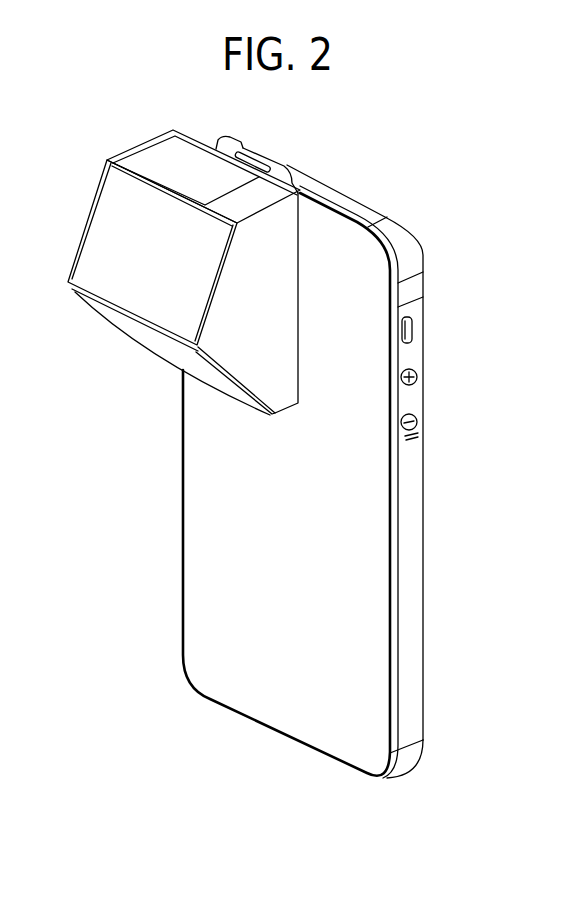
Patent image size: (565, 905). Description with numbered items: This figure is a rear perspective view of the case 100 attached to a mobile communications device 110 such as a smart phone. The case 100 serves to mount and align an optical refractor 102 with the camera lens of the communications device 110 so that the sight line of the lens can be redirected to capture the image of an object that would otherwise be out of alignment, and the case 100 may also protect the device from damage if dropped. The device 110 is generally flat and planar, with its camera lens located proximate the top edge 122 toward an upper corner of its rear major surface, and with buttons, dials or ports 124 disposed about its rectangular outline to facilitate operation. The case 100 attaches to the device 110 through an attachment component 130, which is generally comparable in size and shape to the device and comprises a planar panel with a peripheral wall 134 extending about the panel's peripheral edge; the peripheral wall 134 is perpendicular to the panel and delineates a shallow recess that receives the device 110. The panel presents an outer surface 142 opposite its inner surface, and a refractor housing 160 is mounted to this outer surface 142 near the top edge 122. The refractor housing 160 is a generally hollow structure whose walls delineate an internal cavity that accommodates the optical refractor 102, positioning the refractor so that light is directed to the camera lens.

The case 100 is at (238, 119).
The optical refractor 102 is at (160, 167).
The mobile communications device 110 is at (410, 350).
The top edge 122 is at (260, 157).
The buttons, dials, or ports 124 is at (415, 422).
The attachment component 130 is at (387, 779).
The peripheral wall 134 is at (423, 492).
The outer surface 142 is at (270, 584).
The refractor housing 160 is at (110, 308).